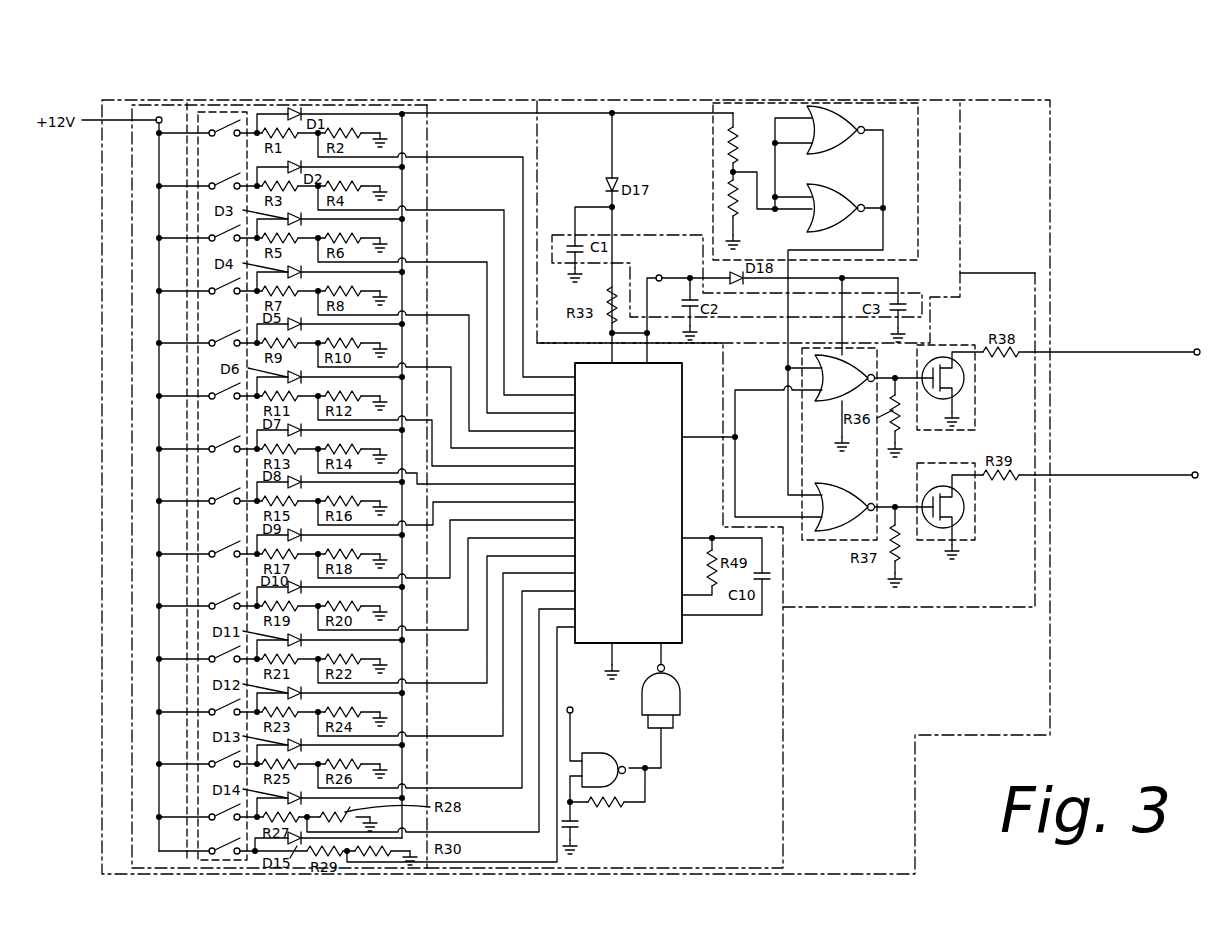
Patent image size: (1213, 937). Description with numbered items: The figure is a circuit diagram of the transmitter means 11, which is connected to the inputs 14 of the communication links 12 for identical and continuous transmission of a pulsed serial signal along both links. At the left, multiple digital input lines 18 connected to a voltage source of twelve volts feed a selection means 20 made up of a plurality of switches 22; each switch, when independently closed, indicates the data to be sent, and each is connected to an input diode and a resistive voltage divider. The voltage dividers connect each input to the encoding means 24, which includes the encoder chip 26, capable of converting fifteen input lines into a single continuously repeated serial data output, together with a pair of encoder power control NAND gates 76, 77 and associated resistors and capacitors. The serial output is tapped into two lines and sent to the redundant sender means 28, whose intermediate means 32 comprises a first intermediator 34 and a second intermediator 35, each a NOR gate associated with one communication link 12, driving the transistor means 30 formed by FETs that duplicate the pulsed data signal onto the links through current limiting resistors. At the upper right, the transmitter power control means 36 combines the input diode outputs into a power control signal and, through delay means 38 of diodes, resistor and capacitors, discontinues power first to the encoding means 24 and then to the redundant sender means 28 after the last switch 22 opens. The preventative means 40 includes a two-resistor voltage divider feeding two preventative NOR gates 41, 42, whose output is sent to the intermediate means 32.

The transmitter means 11 is at (102, 232).
The communication links 12 is at (1108, 352).
The inputs 14 is at (1195, 349).
The multiple digital input lines 18 is at (132, 302).
The selection means 20 is at (427, 130).
The switches 22 is at (198, 160).
The encoding means 24 is at (790, 722).
The integrated circuit chip 26 is at (665, 640).
The redundant sender means 28 is at (970, 607).
The transistor means 30 is at (978, 430).
The intermediate means 32 is at (830, 545).
The first intermediator 34 is at (825, 405).
The second intermediator 35 is at (835, 500).
The transmitter power control means 36 is at (960, 126).
The delay means 38 is at (648, 235).
The preventative means 40 is at (779, 190).
The preventative NOR gate 41 is at (840, 213).
The preventative NOR gate 42 is at (840, 145).
The encoder power control NAND gate 76 is at (605, 765).
The encoder power control NAND gate 77 is at (672, 693).